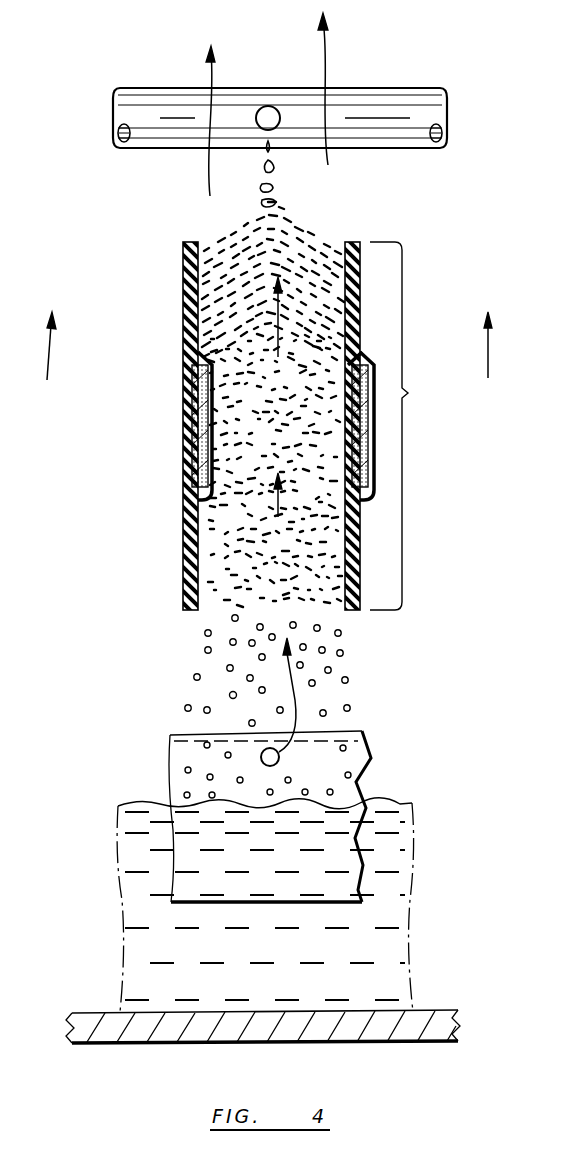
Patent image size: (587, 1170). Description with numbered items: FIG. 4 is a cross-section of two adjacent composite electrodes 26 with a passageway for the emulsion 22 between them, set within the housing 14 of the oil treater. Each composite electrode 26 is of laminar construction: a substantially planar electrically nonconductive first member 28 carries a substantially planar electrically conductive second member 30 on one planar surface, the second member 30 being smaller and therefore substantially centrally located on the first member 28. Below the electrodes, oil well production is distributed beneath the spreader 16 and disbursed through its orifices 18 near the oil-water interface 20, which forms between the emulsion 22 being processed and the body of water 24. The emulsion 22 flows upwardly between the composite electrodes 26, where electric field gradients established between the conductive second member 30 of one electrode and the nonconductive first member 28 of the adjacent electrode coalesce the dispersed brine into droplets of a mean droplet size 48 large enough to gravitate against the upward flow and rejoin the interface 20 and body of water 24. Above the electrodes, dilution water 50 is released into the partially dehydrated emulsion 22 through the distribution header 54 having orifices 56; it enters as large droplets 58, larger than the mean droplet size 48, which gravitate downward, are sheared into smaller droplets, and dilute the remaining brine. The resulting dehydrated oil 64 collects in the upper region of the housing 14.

The housing 14 is at (435, 1012).
The spreader 16 is at (350, 732).
The orifices 18 is at (280, 757).
The oil-water interface 20 is at (395, 802).
The emulsion 22 is at (266, 430).
The body of water 24 is at (400, 915).
The composite electrodes 26 is at (408, 393).
The first member 28 is at (183, 282).
The second member 30 is at (214, 481).
The mean droplet size 48 is at (204, 398).
The dilution water 50 is at (325, 232).
The distribution header 54 is at (398, 86).
The orifices 56 is at (268, 105).
The large droplets 58 is at (260, 188).
The dehydrated oil 64 is at (276, 29).